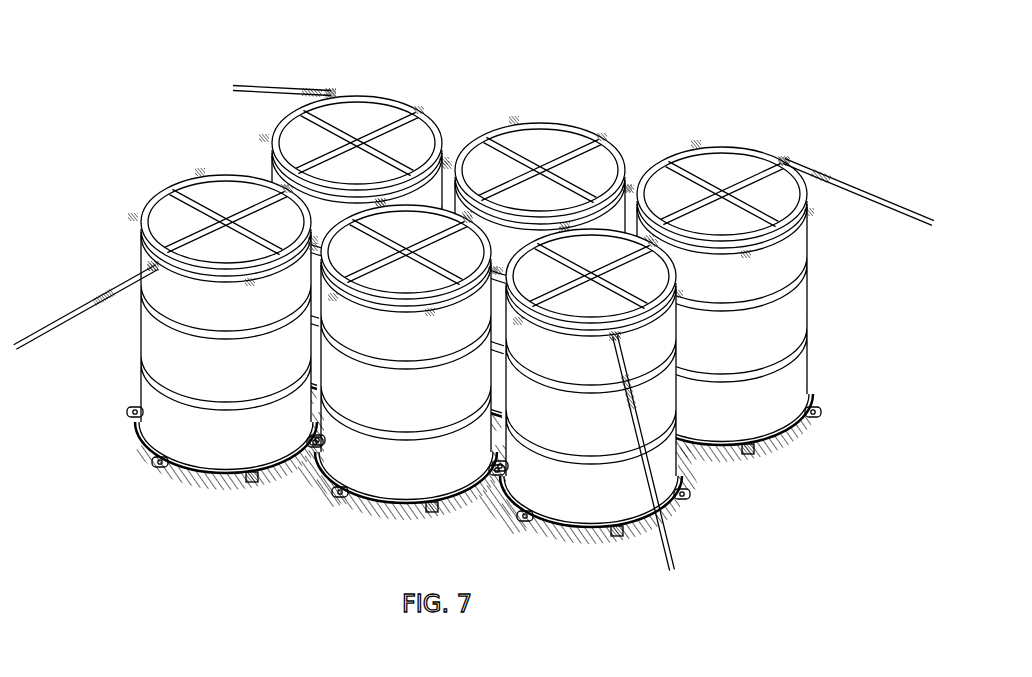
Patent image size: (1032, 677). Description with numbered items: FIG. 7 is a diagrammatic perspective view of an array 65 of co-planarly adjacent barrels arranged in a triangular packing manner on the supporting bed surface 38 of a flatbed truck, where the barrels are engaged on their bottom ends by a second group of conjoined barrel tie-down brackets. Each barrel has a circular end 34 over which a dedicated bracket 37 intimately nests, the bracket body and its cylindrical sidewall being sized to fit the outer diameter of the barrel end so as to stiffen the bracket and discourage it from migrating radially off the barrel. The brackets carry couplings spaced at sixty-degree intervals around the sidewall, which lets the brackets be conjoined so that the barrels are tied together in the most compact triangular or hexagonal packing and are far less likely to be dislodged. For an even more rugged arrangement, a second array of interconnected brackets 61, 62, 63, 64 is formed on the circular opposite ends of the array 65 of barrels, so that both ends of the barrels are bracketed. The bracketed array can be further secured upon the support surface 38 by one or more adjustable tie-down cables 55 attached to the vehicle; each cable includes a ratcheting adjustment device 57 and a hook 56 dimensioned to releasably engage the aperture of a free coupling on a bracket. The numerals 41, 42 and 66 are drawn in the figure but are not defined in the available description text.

The circular end 34 is at (230, 183).
The bracket 37 is at (152, 200).
The supporting bed surface 38 is at (472, 517).
The container 41 is at (556, 120).
The container 42 is at (740, 148).
The tie-down cable 55 is at (282, 86).
The hook 56 is at (338, 90).
The ratcheting adjustment device 57 is at (105, 298).
The bracket 61 is at (200, 476).
The bracket 62 is at (390, 503).
The bracket 63 is at (580, 527).
The bracket 64 is at (803, 428).
The array of barrels 65 is at (647, 54).
The container side wall 66 is at (209, 452).